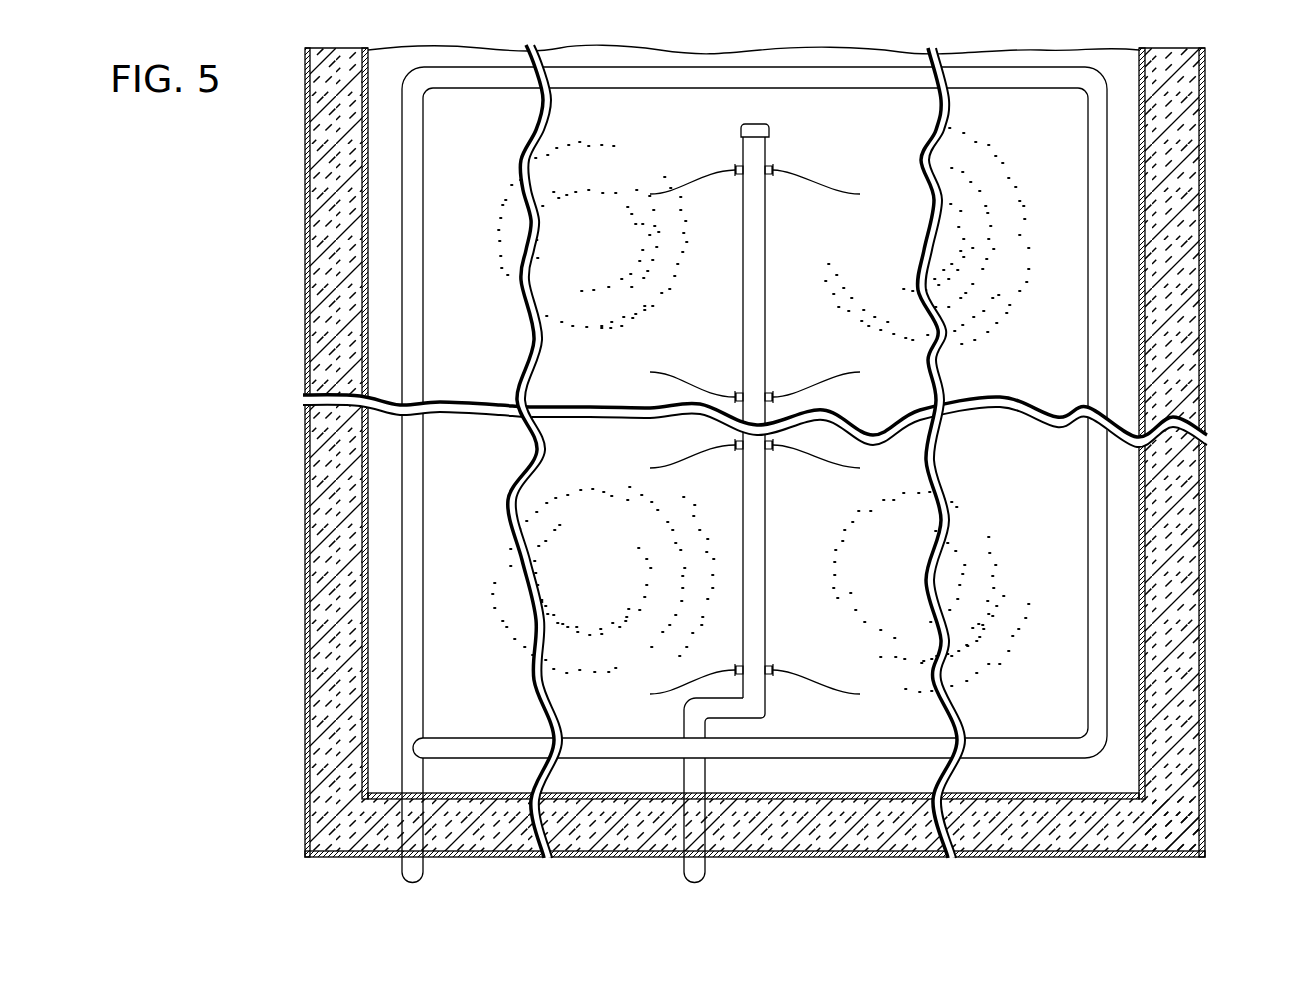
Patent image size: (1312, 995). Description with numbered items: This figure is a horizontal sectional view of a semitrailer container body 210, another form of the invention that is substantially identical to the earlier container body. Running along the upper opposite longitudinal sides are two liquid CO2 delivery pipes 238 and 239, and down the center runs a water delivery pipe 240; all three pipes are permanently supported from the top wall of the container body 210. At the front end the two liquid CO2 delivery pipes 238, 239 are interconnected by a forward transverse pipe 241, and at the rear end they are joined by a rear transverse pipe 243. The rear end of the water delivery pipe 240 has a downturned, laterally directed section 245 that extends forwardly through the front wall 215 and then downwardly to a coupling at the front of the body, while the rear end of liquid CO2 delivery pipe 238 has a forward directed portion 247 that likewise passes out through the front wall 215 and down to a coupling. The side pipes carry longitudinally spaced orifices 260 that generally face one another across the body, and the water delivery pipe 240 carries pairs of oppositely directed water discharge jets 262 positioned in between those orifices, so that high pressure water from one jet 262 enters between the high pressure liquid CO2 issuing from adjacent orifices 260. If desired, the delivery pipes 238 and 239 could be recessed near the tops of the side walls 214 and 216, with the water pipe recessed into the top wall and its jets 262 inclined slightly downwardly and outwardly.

The semitrailer container body 210 is at (1159, 57).
The side wall 214 is at (320, 620).
The front wall 215 is at (1172, 826).
The side wall 216 is at (1180, 418).
The liquid CO2 delivery pipe 238 is at (408, 166).
The liquid CO2 delivery pipe 239 is at (1097, 158).
The water delivery pipe 240 is at (757, 543).
The forward transverse pipe 241 is at (628, 76).
The rear transverse pipe 243 is at (843, 750).
The downturned laterally directed section 245 is at (720, 712).
The forward directed portion 247 is at (412, 825).
The orifices 260 is at (422, 283).
The water discharge jets 262 is at (755, 435).